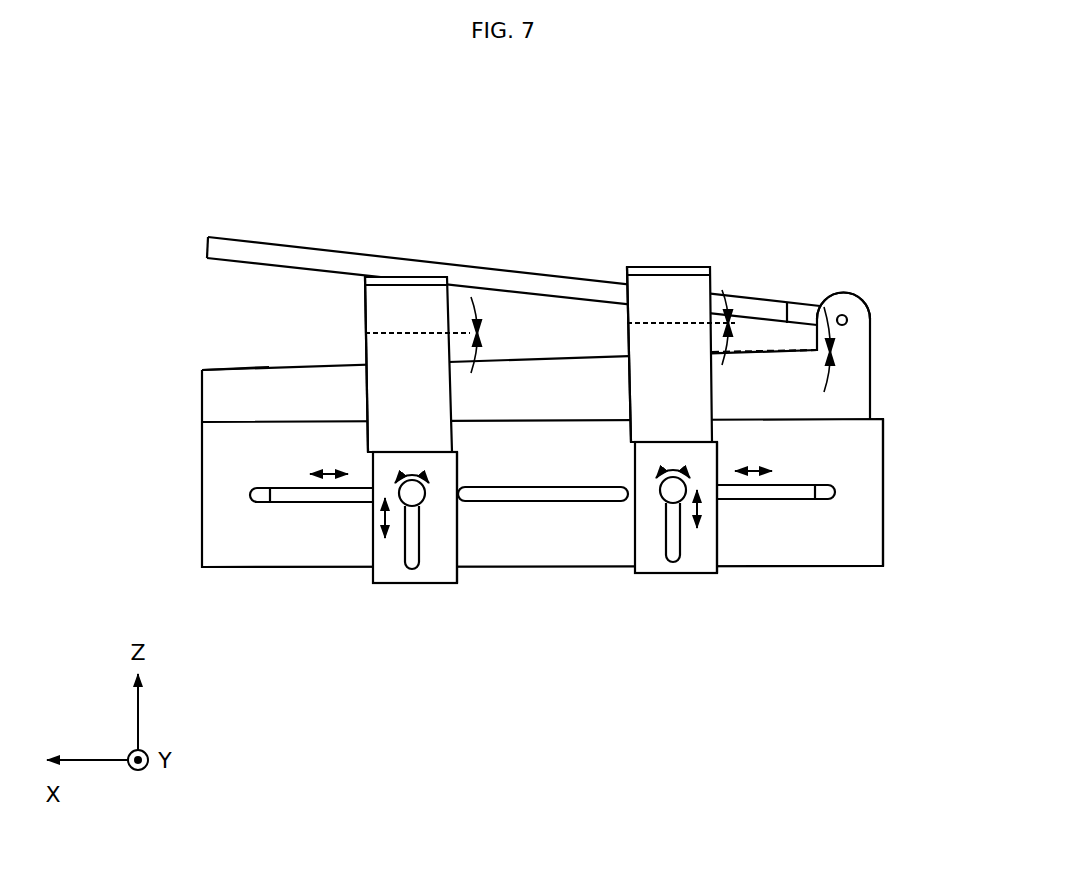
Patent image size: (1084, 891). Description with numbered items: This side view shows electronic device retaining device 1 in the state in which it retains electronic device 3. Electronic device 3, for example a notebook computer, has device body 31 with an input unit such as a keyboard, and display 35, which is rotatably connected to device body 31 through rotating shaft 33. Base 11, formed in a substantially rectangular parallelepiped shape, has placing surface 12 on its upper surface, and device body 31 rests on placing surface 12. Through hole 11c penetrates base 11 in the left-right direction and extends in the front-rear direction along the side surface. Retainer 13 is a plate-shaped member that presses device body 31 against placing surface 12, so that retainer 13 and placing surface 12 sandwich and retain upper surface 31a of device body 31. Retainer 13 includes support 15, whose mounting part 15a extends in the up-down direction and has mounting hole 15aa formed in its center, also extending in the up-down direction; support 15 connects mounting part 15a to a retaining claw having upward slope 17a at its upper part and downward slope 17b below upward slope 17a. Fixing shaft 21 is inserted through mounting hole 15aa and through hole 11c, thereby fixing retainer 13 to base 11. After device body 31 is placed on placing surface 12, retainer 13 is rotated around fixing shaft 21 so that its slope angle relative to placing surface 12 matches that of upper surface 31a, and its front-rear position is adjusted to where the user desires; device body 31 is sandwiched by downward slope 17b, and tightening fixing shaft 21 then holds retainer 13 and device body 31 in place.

The electronic device retaining device 1 is at (902, 476).
The electronic device 3 is at (876, 229).
The base 11 is at (850, 517).
The through hole 11c is at (290, 503).
The placing surface 12 is at (845, 419).
The retainer 13 is at (412, 590).
The support 15 is at (366, 525).
The mounting part 15a is at (442, 556).
The mounting hole 15aa is at (402, 548).
The upward slope 17a is at (403, 277).
The downward slope 17b is at (366, 352).
The fixing shaft 21 is at (412, 494).
The device body 31 is at (230, 397).
The upper surface 31a is at (269, 363).
The rotating shaft 33 is at (848, 316).
The display 35 is at (289, 246).